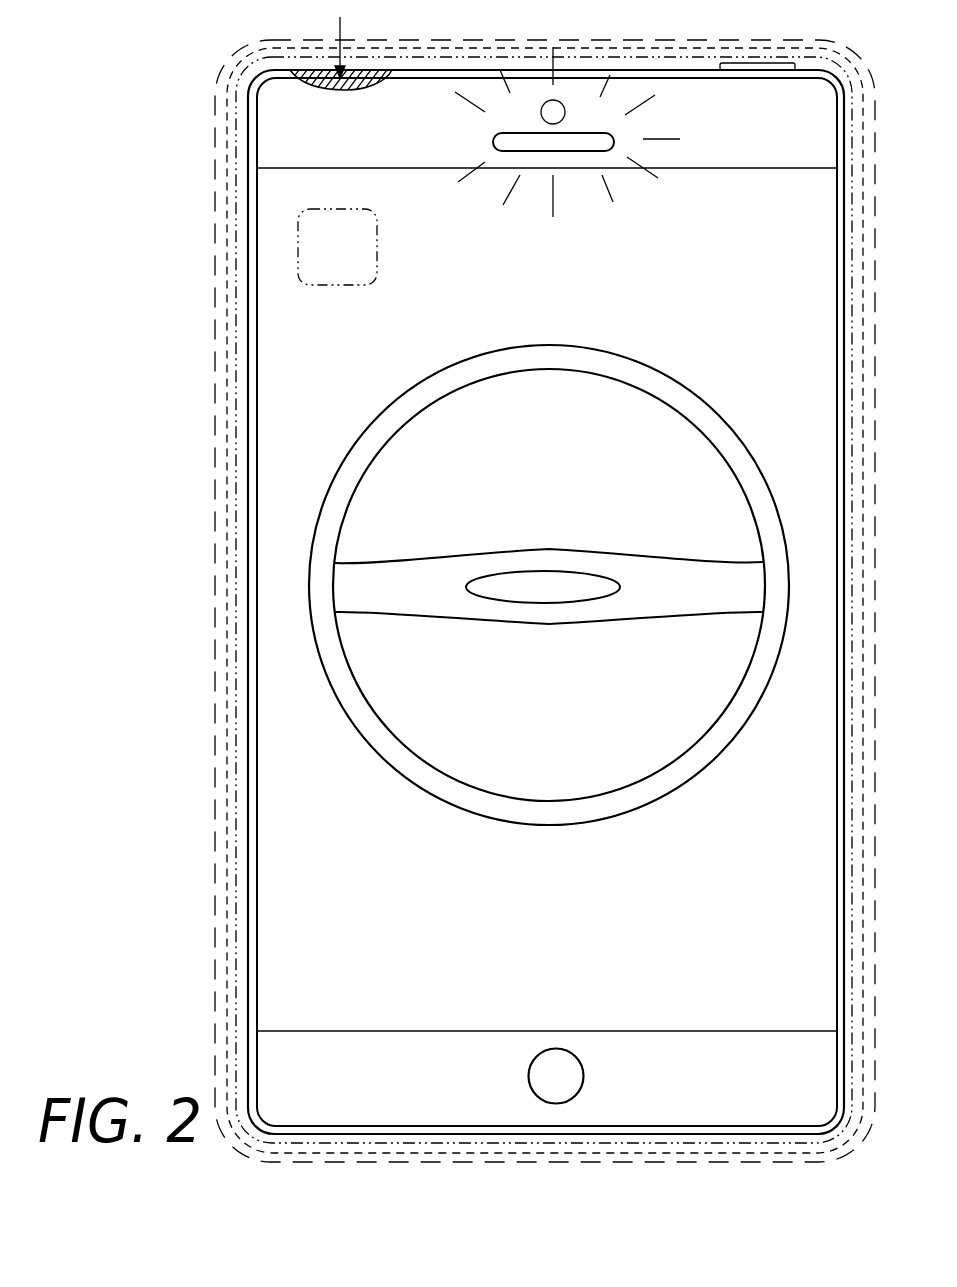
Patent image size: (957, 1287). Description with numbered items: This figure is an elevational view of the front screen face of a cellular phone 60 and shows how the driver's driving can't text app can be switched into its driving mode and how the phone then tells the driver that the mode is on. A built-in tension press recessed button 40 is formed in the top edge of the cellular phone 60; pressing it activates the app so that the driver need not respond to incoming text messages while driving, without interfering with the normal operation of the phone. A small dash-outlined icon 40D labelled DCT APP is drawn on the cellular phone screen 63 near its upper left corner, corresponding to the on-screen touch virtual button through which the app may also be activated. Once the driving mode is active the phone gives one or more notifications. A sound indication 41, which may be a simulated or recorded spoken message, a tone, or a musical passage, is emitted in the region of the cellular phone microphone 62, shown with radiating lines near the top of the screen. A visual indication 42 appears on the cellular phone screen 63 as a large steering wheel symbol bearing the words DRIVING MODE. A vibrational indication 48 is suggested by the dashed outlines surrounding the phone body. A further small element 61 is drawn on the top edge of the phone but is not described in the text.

The built-in tension press recessed button 40 is at (308, 68).
The DCT application icon 40D is at (298, 266).
The sound indication 41 is at (473, 142).
The visual indication 42 is at (418, 378).
The vibrational indication 48 is at (213, 547).
The cellular phone 60 is at (243, 137).
The side button 61 is at (760, 62).
The cellular phone microphone 62 is at (612, 133).
The cellular phone screen 63 is at (278, 762).